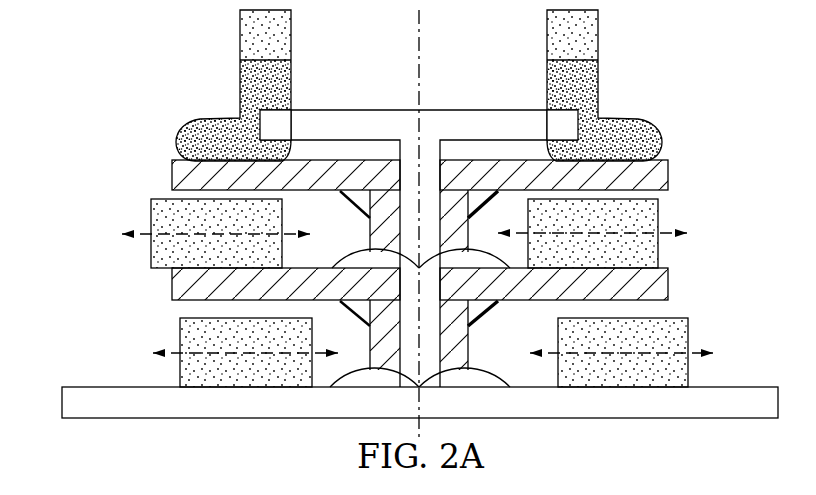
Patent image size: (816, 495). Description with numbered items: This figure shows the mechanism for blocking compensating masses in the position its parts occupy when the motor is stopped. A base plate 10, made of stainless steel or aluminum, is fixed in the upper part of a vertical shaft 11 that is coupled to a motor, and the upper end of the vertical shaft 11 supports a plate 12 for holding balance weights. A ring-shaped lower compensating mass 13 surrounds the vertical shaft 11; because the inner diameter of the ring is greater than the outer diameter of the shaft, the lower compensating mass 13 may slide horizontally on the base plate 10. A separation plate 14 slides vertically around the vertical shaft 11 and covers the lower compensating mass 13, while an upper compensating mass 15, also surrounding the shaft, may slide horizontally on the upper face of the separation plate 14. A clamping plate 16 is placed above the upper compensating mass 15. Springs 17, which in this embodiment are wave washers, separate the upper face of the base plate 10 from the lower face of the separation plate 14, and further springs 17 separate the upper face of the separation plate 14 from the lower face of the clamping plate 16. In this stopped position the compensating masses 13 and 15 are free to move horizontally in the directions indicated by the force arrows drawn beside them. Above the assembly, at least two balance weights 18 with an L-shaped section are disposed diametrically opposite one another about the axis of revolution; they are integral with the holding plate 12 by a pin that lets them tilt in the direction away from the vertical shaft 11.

The base plate 10 is at (88, 397).
The vertical shaft 11 is at (420, 35).
The plate for holding balance weights 12 is at (377, 118).
The lower compensating mass 13 is at (180, 323).
The separation plate 14 is at (377, 332).
The upper compensating mass 15 is at (151, 208).
The clamping plate 16 is at (172, 178).
The spring 17 is at (355, 258).
The balance weight 18 is at (240, 44).